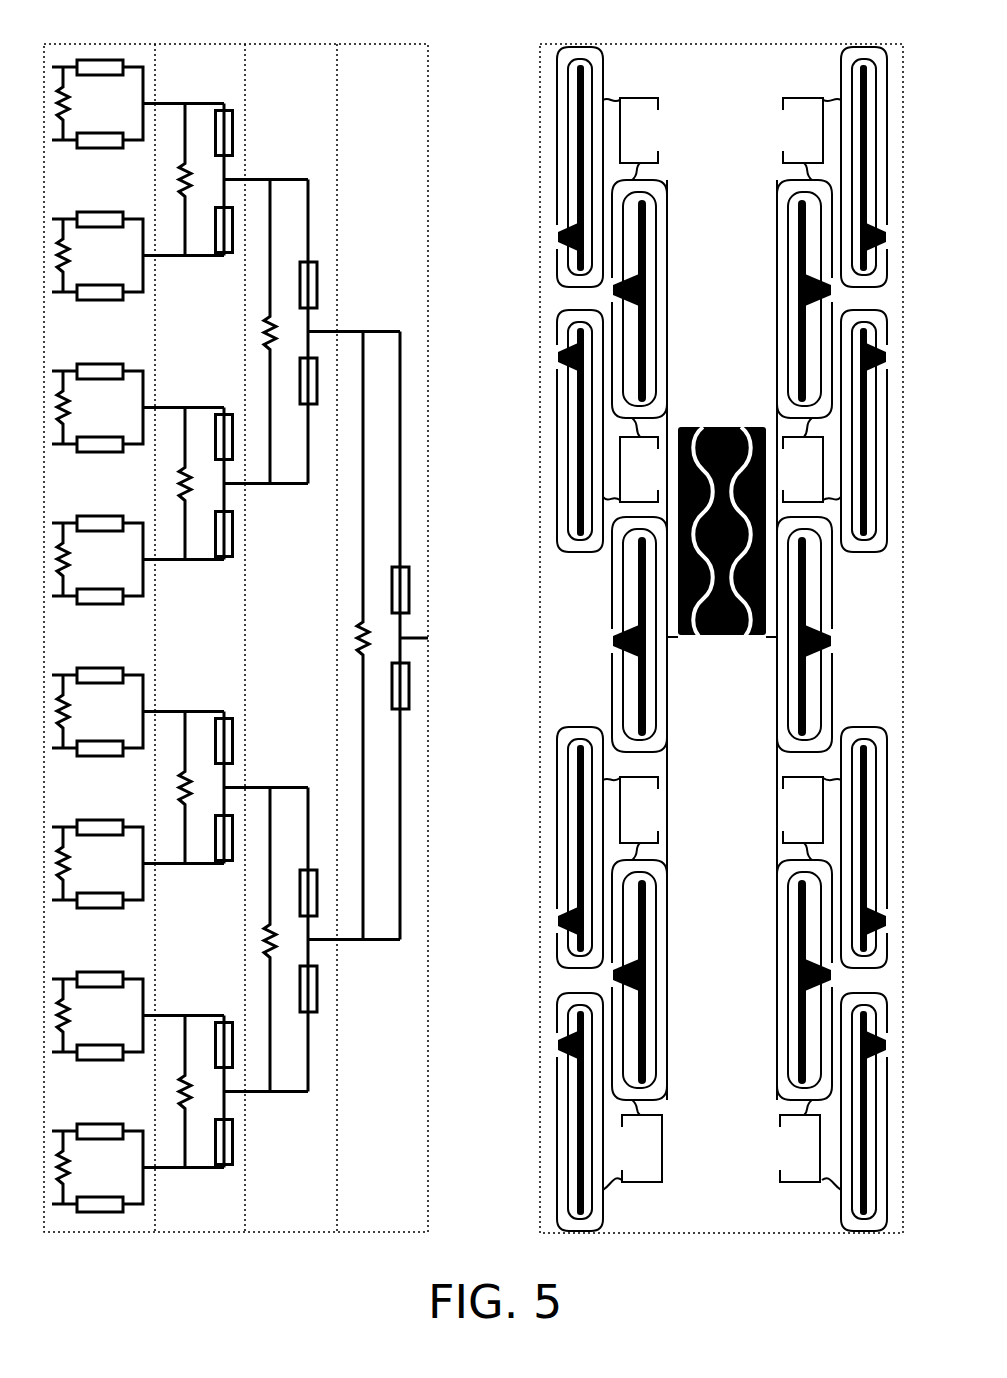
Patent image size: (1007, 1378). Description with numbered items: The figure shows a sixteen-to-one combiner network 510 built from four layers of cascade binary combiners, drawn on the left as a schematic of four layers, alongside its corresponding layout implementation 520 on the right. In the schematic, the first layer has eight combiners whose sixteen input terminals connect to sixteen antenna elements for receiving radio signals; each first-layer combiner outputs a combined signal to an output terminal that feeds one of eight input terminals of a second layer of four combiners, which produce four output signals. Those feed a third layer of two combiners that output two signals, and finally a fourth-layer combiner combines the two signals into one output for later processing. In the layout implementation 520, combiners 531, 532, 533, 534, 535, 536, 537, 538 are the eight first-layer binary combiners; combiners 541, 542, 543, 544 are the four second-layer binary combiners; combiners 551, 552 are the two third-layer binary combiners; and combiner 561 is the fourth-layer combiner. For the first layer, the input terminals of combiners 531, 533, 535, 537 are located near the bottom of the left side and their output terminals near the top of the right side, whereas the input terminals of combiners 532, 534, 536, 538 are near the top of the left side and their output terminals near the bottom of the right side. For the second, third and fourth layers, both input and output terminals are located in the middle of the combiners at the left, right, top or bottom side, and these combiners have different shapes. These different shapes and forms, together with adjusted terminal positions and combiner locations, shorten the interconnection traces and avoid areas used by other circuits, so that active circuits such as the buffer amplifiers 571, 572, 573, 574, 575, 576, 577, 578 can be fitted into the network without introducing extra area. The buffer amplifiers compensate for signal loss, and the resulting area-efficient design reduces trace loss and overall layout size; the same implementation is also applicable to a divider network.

The 16-to-1 combiner network 510 is at (270, 44).
The layout implementation 520 is at (718, 44).
The first layer binary combiner 531 is at (557, 150).
The first layer binary combiner 532 is at (557, 452).
The first layer binary combiner 533 is at (557, 810).
The first layer binary combiner 534 is at (557, 1133).
The first layer binary combiner 535 is at (887, 150).
The first layer binary combiner 536 is at (887, 455).
The first layer binary combiner 537 is at (887, 808).
The first layer binary combiner 538 is at (887, 1131).
The second layer binary combiner 541 is at (667, 214).
The second layer binary combiner 542 is at (667, 1045).
The second layer binary combiner 543 is at (777, 250).
The second layer binary combiner 544 is at (777, 1010).
The third layer binary combiner 551 is at (612, 638).
The third layer binary combiner 552 is at (832, 638).
The fourth layer combiner 561 is at (720, 427).
The buffer amplifier 571 is at (626, 145).
The buffer amplifier 572 is at (626, 484).
The buffer amplifier 573 is at (626, 825).
The buffer amplifier 574 is at (629, 1163).
The buffer amplifier 575 is at (787, 145).
The buffer amplifier 576 is at (790, 484).
The buffer amplifier 577 is at (790, 825).
The buffer amplifier 578 is at (787, 1163).